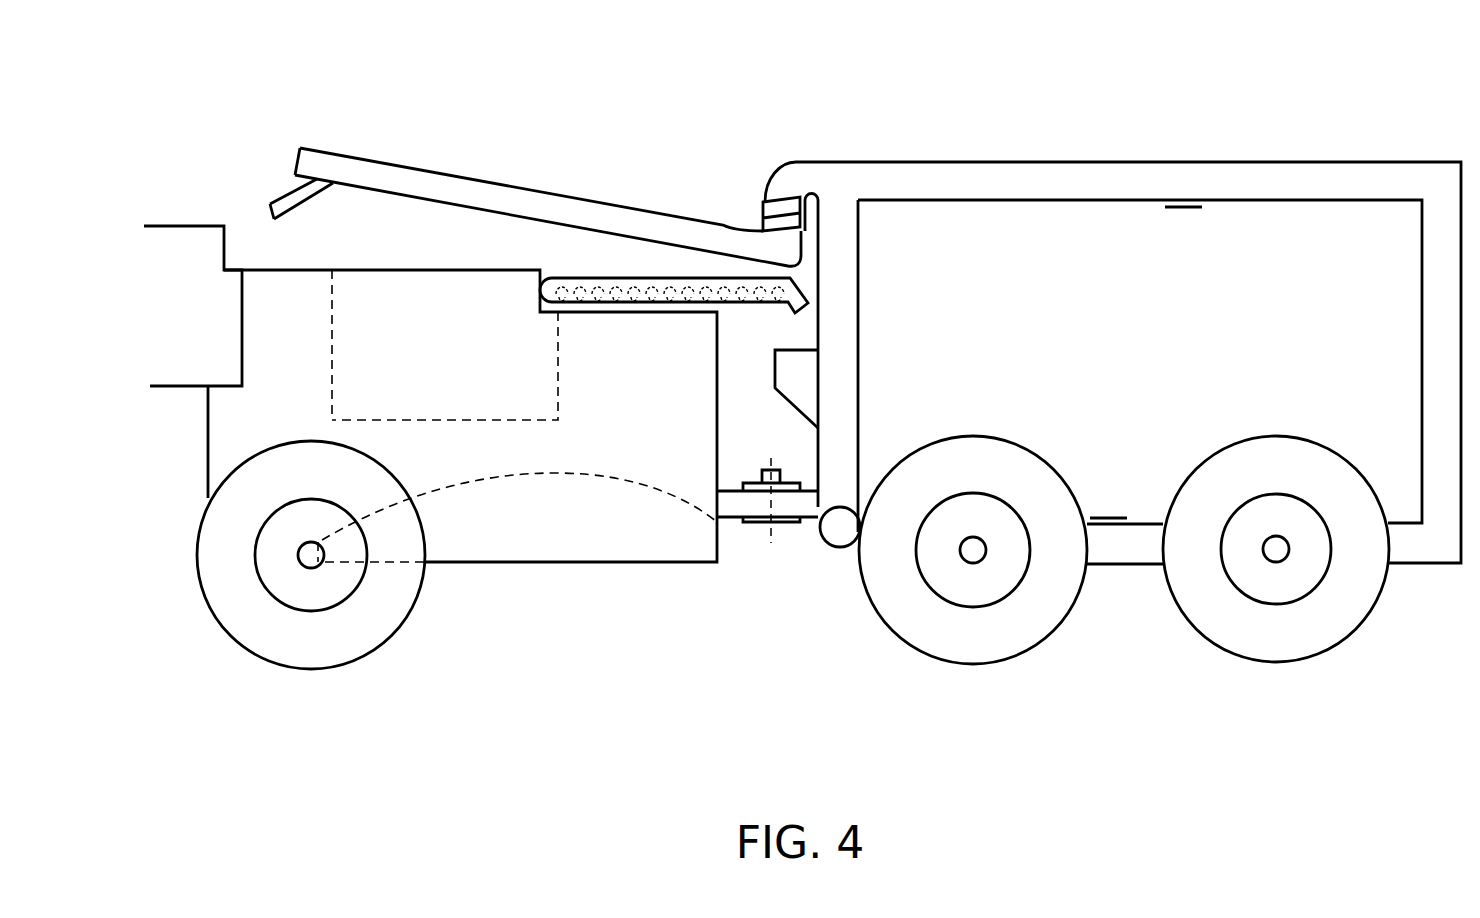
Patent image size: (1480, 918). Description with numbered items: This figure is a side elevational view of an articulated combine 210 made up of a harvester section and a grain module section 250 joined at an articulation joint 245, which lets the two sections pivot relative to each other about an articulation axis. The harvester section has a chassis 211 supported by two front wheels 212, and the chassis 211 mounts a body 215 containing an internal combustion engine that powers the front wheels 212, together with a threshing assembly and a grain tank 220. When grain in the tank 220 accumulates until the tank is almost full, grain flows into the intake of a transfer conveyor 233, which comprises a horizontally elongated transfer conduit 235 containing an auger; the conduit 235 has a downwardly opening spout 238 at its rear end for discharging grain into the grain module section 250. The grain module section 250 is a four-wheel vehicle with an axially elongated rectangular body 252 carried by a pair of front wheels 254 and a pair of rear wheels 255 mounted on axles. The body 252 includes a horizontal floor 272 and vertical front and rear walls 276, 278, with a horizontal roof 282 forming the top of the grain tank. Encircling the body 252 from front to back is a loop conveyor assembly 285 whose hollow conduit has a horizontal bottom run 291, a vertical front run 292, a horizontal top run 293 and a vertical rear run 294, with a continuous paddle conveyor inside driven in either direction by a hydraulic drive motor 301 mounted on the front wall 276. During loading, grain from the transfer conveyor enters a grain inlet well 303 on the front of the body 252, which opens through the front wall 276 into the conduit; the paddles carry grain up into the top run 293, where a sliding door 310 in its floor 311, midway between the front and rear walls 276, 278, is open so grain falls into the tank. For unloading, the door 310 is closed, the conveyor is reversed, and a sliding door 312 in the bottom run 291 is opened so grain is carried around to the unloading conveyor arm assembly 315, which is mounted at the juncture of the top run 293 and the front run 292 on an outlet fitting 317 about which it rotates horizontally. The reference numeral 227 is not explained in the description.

The articulated combine 210 is at (495, 602).
The chassis 211 is at (600, 563).
The front wheels 212 is at (308, 653).
The body 215 is at (278, 288).
The grain tank 220 is at (418, 287).
The conveyor tray 227 is at (595, 277).
The transfer conveyor 233 is at (493, 366).
The transfer conduit 235 is at (660, 280).
The spout 238 is at (822, 292).
The articulation joint 245 is at (753, 533).
The grain module section 250 is at (1132, 590).
The grain module body 252 is at (1307, 213).
The front wheels 254 is at (952, 655).
The rear wheels 255 is at (1272, 655).
The floor 272 is at (1132, 535).
The front wall 276 is at (858, 385).
The rear wall 278 is at (1420, 373).
The roof 282 is at (1097, 200).
The loop conveyor assembly 285 is at (1037, 160).
The horizontal bottom run 291 is at (1085, 567).
The vertical front run 292 is at (852, 330).
The horizontal top run 293 is at (997, 200).
The vertical rear run 294 is at (1442, 298).
The hydraulic drive motor 301 is at (840, 540).
The grain inlet well 303 is at (742, 317).
The sliding door 310 is at (1187, 210).
The floor 311 is at (1155, 160).
The sliding door 312 is at (1108, 518).
The unloading conveyor arm assembly 315 is at (733, 193).
The outlet fitting 317 is at (790, 183).